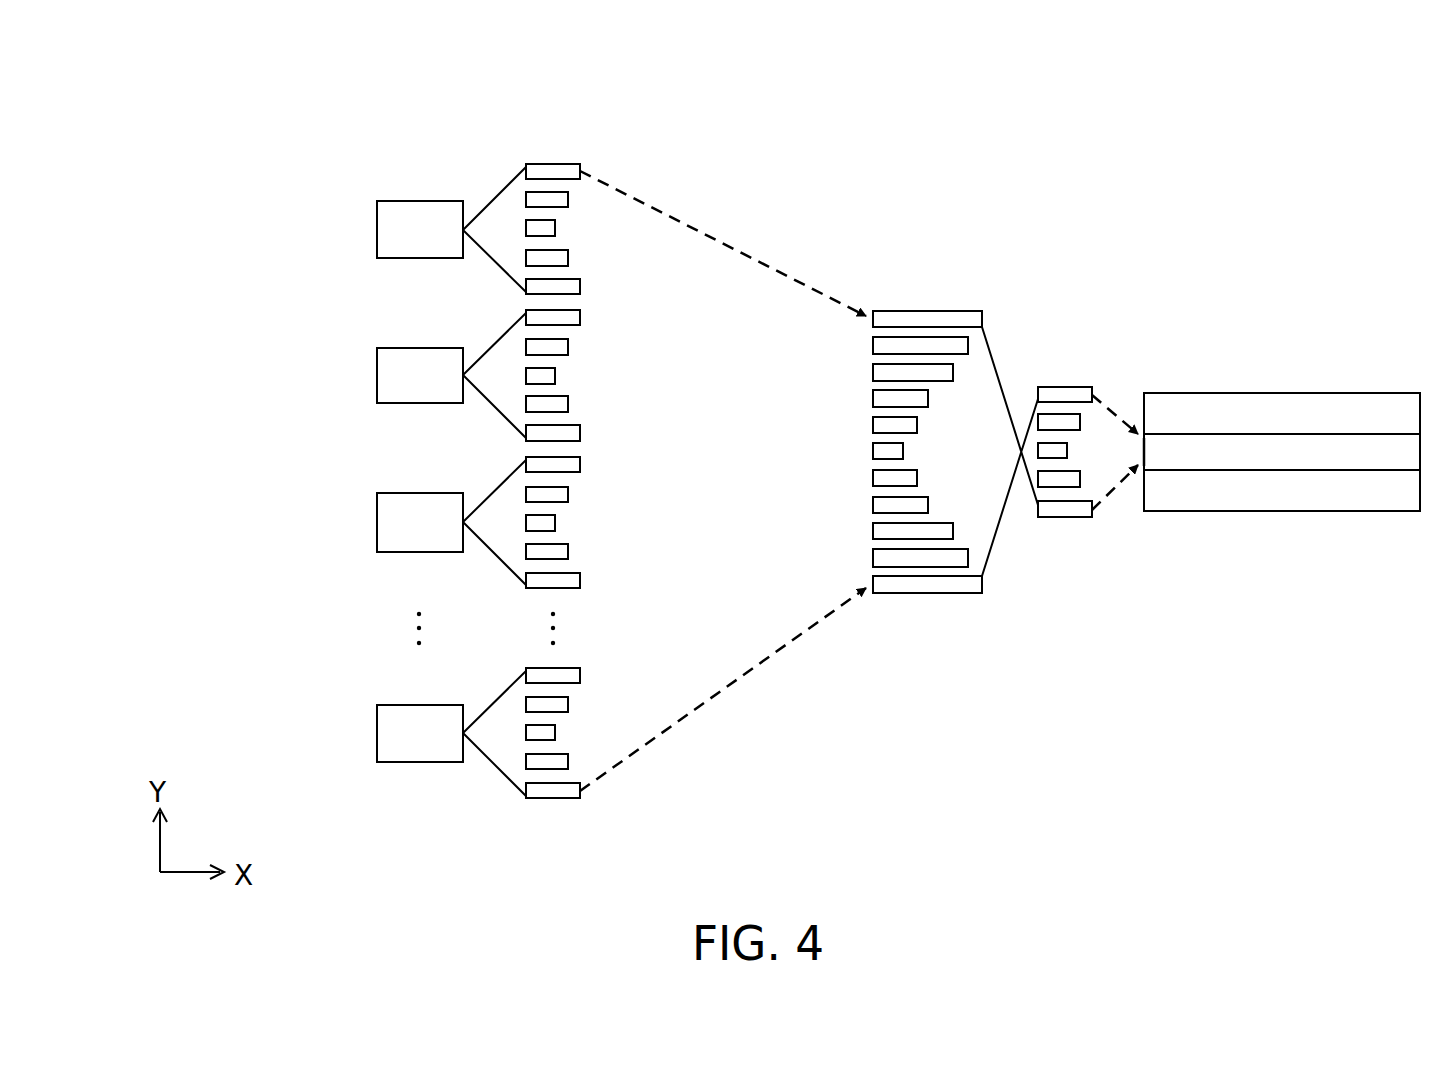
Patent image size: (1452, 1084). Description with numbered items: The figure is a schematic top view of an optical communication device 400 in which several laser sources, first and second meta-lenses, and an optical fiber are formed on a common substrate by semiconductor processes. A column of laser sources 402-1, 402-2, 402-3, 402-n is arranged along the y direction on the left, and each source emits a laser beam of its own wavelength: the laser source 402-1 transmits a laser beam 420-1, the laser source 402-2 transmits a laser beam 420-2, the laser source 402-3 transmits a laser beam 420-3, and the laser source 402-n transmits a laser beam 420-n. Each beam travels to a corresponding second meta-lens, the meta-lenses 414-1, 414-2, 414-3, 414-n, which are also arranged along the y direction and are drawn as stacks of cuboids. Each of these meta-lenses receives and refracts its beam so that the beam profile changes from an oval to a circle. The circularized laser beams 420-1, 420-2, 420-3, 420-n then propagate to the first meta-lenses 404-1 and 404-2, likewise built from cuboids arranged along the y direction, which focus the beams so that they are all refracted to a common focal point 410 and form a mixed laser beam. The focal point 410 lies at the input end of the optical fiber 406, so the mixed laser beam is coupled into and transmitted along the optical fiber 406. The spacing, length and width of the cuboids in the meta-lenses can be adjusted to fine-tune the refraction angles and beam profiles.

The optical communication device 400 is at (218, 73).
The laser source 402-1 is at (377, 229).
The laser source 402-2 is at (377, 375).
The laser source 402-3 is at (377, 522).
The laser source 402-n is at (377, 733).
The laser beam 420-1 is at (510, 214).
The laser beam 420-2 is at (510, 362).
The laser beam 420-3 is at (510, 509).
The laser beam 420-n is at (510, 720).
The meta-lens 414-1 is at (558, 164).
The meta-lens 414-2 is at (580, 318).
The meta-lens 414-3 is at (580, 465).
The meta-lens 414-n is at (580, 672).
The meta-lens 404-1 is at (928, 311).
The meta-lens 404-2 is at (1062, 387).
The optical fiber 406 is at (1349, 407).
The focal point 410 is at (1146, 452).